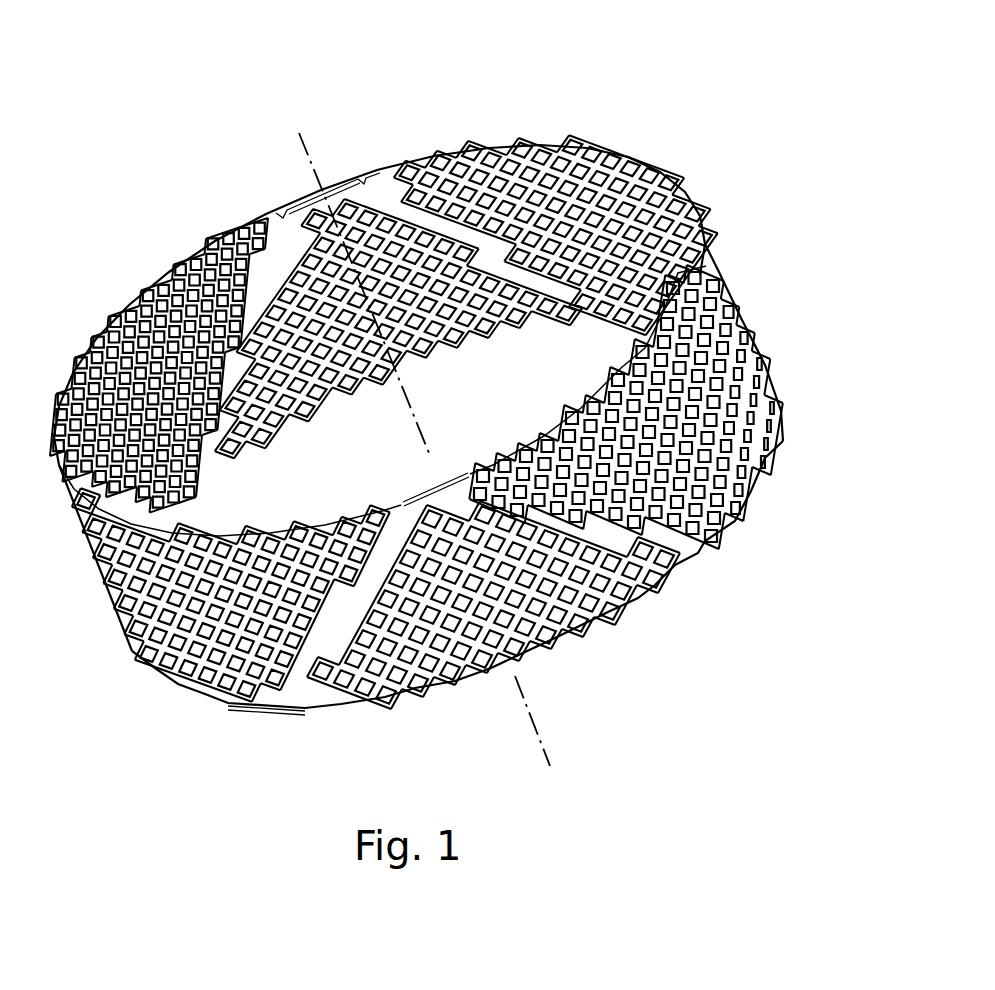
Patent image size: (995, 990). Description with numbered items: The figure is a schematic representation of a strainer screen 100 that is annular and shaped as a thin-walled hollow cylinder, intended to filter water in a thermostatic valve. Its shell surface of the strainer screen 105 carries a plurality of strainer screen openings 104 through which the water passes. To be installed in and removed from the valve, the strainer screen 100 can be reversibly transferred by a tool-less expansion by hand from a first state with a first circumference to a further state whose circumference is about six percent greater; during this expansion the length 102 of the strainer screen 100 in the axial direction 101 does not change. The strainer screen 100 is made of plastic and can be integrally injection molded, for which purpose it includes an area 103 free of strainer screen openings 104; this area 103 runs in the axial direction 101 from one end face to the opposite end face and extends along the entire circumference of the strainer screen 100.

The strainer screen 100 is at (382, 21).
The axial direction 101 is at (528, 716).
The length 102 is at (469, 399).
The area 103 is at (270, 257).
The strainer screen openings 104 is at (600, 607).
The shell surface of the strainer screen 105 is at (562, 183).